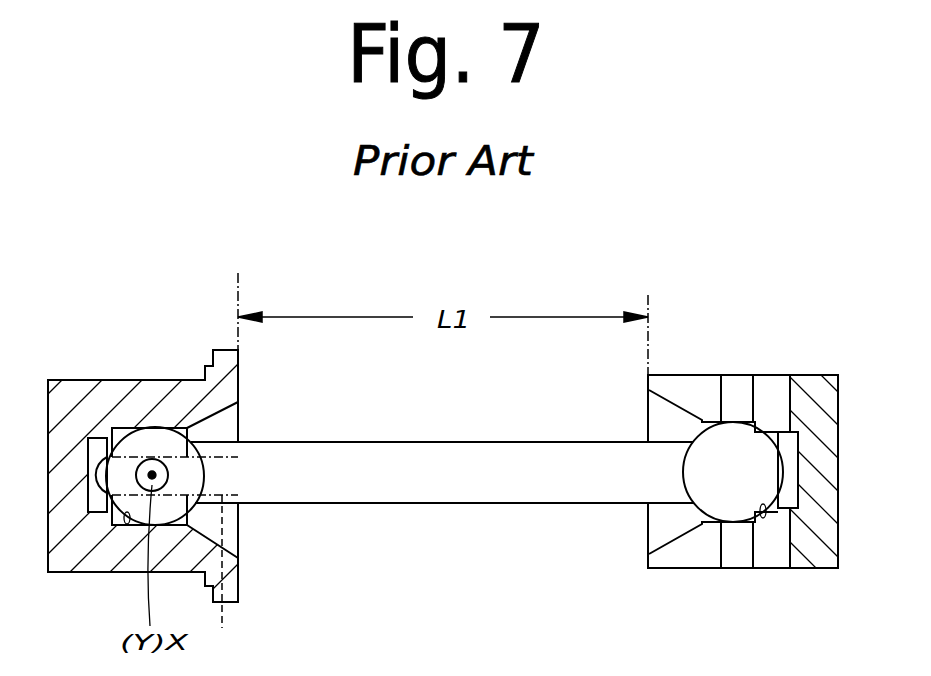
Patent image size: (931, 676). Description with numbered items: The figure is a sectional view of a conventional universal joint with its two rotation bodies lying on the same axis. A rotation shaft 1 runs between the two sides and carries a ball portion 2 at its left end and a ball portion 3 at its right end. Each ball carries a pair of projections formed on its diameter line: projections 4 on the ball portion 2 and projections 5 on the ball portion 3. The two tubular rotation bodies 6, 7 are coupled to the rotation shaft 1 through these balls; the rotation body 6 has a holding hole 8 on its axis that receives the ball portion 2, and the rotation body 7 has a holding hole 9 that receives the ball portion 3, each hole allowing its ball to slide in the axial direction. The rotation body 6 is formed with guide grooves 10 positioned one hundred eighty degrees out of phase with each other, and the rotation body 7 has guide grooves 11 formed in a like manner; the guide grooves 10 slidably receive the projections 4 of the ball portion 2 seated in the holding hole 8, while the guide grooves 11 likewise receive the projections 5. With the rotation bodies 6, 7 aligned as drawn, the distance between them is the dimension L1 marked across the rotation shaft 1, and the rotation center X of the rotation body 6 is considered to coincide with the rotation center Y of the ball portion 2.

The rotation shaft 1 is at (389, 500).
The ball portion 2 is at (132, 427).
The ball portion 3 is at (753, 447).
The projections 4 is at (164, 465).
The projections 5 is at (736, 392).
The rotation body 6 is at (58, 390).
The rotation body 7 is at (822, 392).
The holding hole 8 is at (130, 522).
The holding hole 9 is at (762, 516).
The guide grooves 10 is at (226, 575).
The guide grooves 11 is at (691, 388).